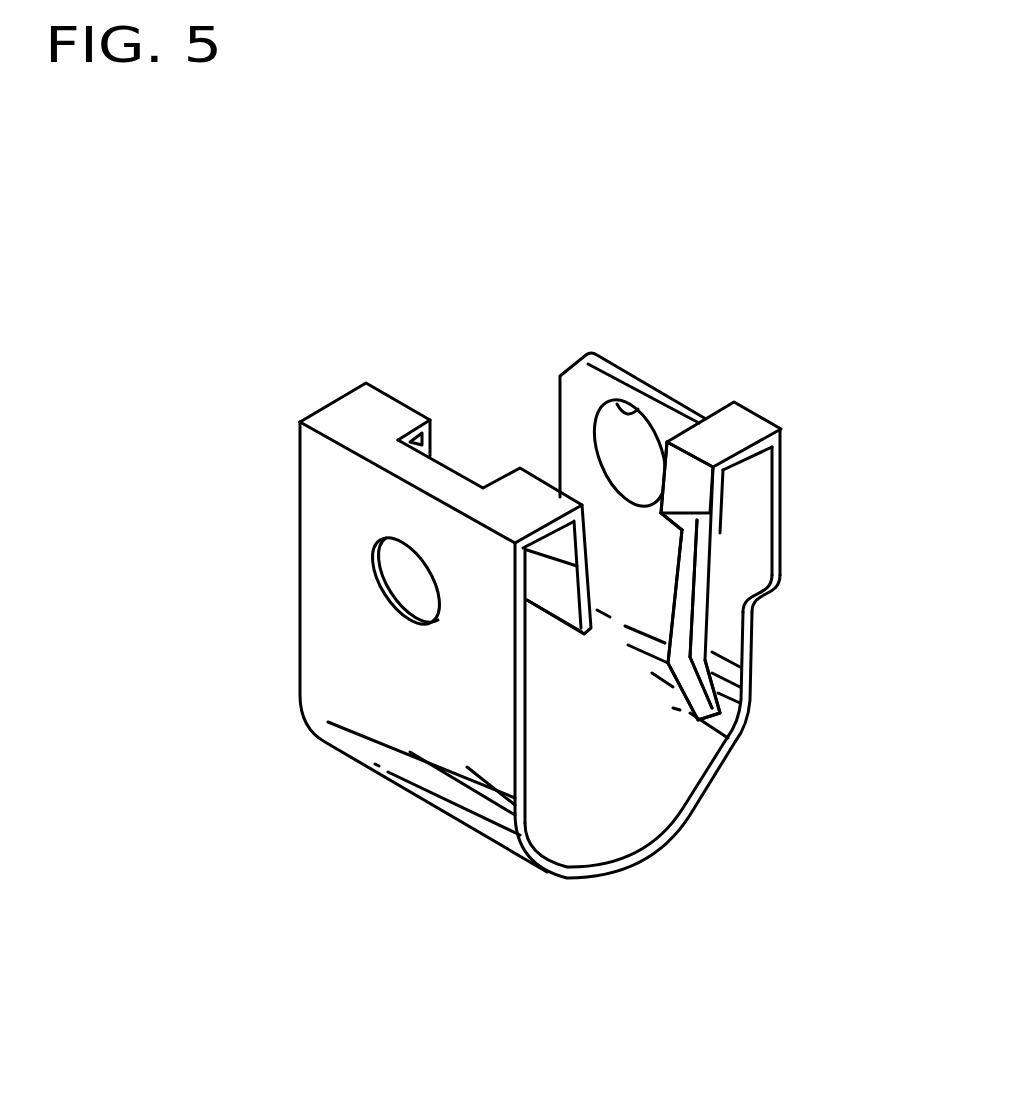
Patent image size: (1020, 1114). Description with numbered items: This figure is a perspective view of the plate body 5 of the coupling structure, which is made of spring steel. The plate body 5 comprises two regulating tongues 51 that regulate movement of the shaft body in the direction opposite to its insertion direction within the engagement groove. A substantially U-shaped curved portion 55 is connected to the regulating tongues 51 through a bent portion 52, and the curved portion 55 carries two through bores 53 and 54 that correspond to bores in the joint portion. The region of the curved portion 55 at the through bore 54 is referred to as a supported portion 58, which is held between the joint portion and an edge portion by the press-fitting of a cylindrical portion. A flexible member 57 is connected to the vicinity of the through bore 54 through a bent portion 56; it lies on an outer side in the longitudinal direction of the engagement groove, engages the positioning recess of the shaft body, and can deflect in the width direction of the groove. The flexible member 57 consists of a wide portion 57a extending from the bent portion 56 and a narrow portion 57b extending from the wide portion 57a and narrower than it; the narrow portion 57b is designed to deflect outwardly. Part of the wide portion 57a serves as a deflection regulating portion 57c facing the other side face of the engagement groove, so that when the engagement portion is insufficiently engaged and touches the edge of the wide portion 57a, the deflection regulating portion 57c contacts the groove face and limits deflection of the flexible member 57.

The plate body 5 is at (559, 601).
The regulating tongues 51 is at (433, 442).
The bent portion 52 is at (529, 485).
The through bore 53 is at (376, 587).
The through bore 54 is at (636, 408).
The curved portion 55 is at (627, 833).
The bent portion 56 is at (737, 425).
The flexible member 57 is at (794, 593).
The wide portion 57a is at (700, 521).
The narrow portion 57b is at (703, 648).
The deflection regulating portion 57c is at (664, 514).
The supported portion 58 is at (579, 404).